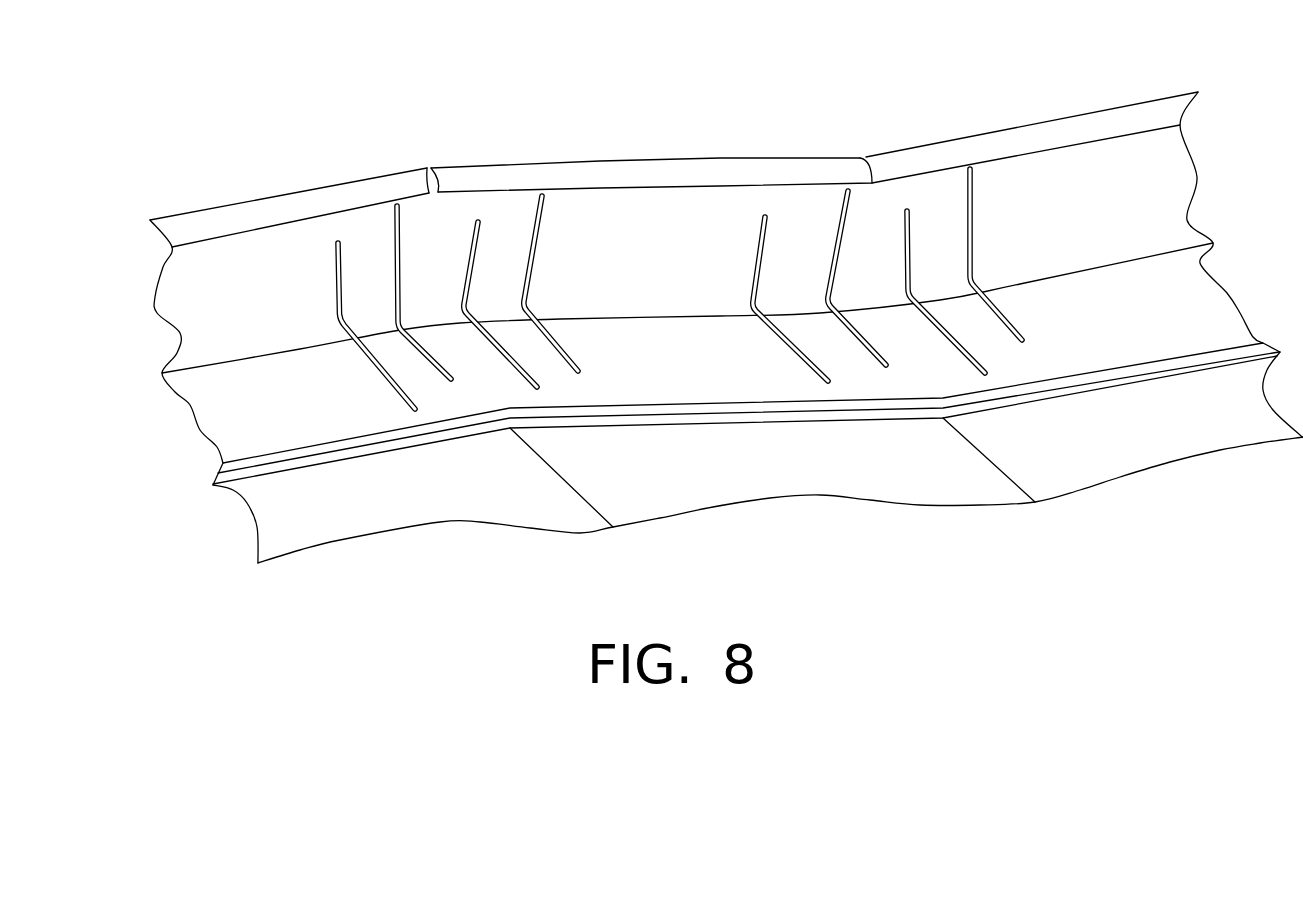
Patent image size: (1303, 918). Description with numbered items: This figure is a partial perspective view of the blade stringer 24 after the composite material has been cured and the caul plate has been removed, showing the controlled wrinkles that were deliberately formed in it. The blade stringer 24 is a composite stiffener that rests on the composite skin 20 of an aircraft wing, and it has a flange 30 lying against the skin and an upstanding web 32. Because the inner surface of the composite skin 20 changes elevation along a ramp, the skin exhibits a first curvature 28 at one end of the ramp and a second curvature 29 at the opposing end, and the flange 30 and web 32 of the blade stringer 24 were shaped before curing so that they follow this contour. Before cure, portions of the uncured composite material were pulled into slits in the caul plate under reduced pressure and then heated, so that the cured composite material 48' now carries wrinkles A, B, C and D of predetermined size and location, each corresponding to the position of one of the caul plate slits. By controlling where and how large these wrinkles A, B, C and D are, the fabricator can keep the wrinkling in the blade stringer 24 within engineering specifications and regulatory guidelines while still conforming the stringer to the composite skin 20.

The composite skin 20 is at (322, 514).
The blade stringer 24 is at (692, 127).
The first curvature 28 is at (643, 548).
The second curvature 29 is at (1058, 516).
The flange 30 is at (257, 421).
The web 32 is at (250, 263).
The cured composite material 48' is at (963, 267).
The wrinkle A is at (481, 233).
The wrinkle B is at (399, 224).
The wrinkle C is at (338, 247).
The wrinkle D is at (543, 218).